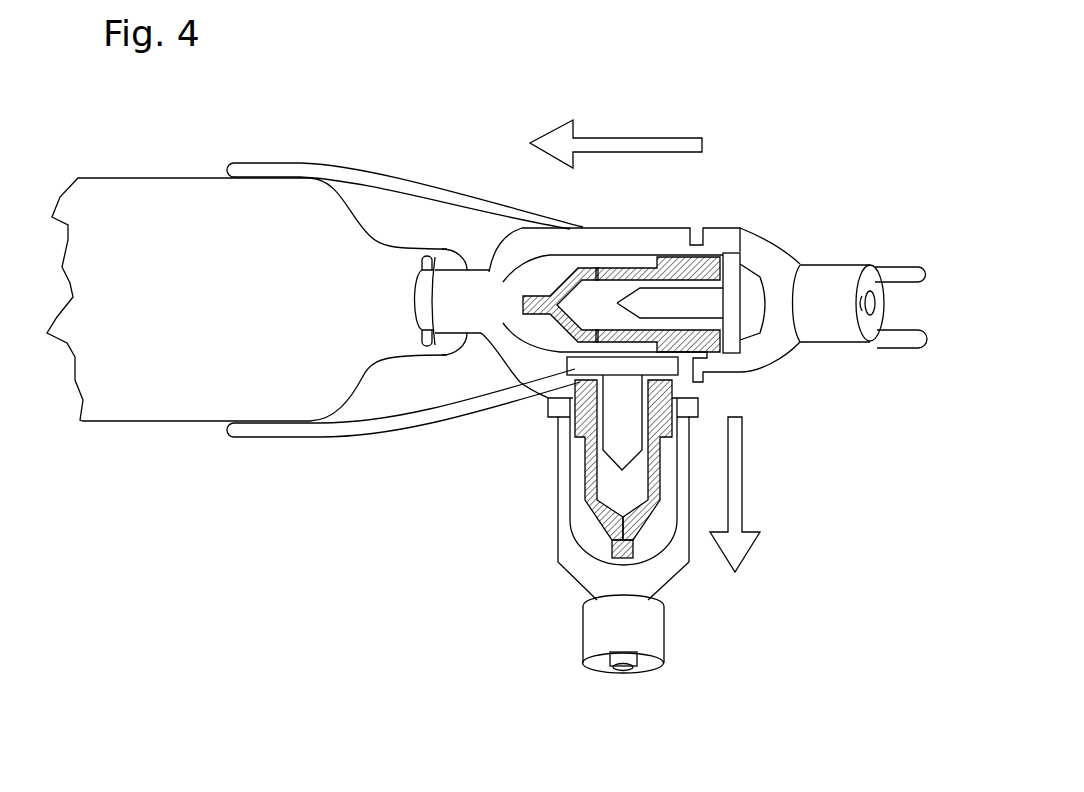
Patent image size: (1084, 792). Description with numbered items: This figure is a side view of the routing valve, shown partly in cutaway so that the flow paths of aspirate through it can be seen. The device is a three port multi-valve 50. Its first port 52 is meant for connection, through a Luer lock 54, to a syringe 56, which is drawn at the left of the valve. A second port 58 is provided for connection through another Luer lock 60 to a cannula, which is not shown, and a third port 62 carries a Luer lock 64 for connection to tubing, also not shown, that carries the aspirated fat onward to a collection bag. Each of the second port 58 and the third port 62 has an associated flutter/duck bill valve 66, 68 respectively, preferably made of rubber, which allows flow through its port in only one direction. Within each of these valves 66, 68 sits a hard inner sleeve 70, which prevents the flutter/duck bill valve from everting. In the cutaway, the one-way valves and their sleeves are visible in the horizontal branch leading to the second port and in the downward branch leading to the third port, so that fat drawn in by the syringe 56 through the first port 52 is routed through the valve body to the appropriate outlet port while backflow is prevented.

The three port multi-valve 50 is at (772, 466).
The first port 52 is at (496, 252).
The Luer lock 54 is at (413, 300).
The syringe 56 is at (203, 224).
The second port 58 is at (833, 292).
The Luer lock 60 is at (880, 280).
The third port 62 is at (657, 619).
The Luer lock 64 is at (618, 665).
The flutter/duck bill valve 66 is at (652, 268).
The flutter/duck bill valve 68 is at (585, 503).
The hard inner sleeve 70 is at (752, 273).